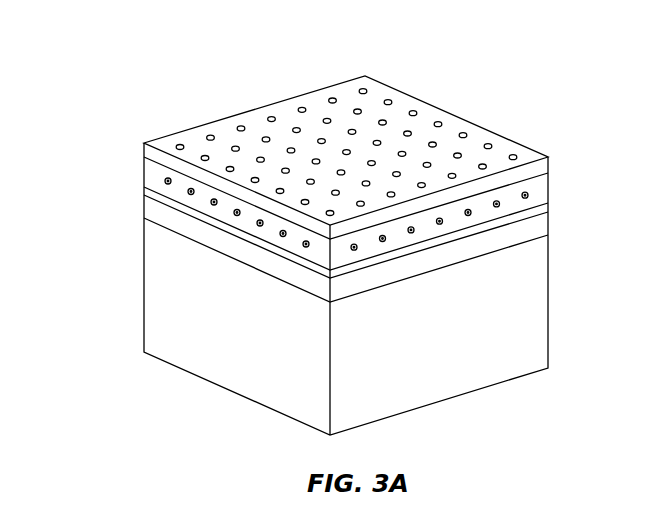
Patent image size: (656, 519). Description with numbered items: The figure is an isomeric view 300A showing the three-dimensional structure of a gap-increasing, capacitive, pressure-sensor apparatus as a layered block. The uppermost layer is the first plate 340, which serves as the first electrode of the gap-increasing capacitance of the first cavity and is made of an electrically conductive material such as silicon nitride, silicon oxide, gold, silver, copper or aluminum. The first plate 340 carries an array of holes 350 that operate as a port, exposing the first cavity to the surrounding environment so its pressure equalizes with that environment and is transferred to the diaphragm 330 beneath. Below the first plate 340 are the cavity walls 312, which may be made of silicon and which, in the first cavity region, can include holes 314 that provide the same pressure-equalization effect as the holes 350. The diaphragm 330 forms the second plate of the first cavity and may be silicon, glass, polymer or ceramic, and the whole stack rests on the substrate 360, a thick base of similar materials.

The isomeric view 300A is at (133, 55).
The cavity walls 312 is at (151, 210).
The holes 314 is at (164, 180).
The diaphragm 330 is at (549, 205).
The first plate 340 is at (532, 155).
The holes 350 is at (296, 127).
The substrate 360 is at (436, 332).